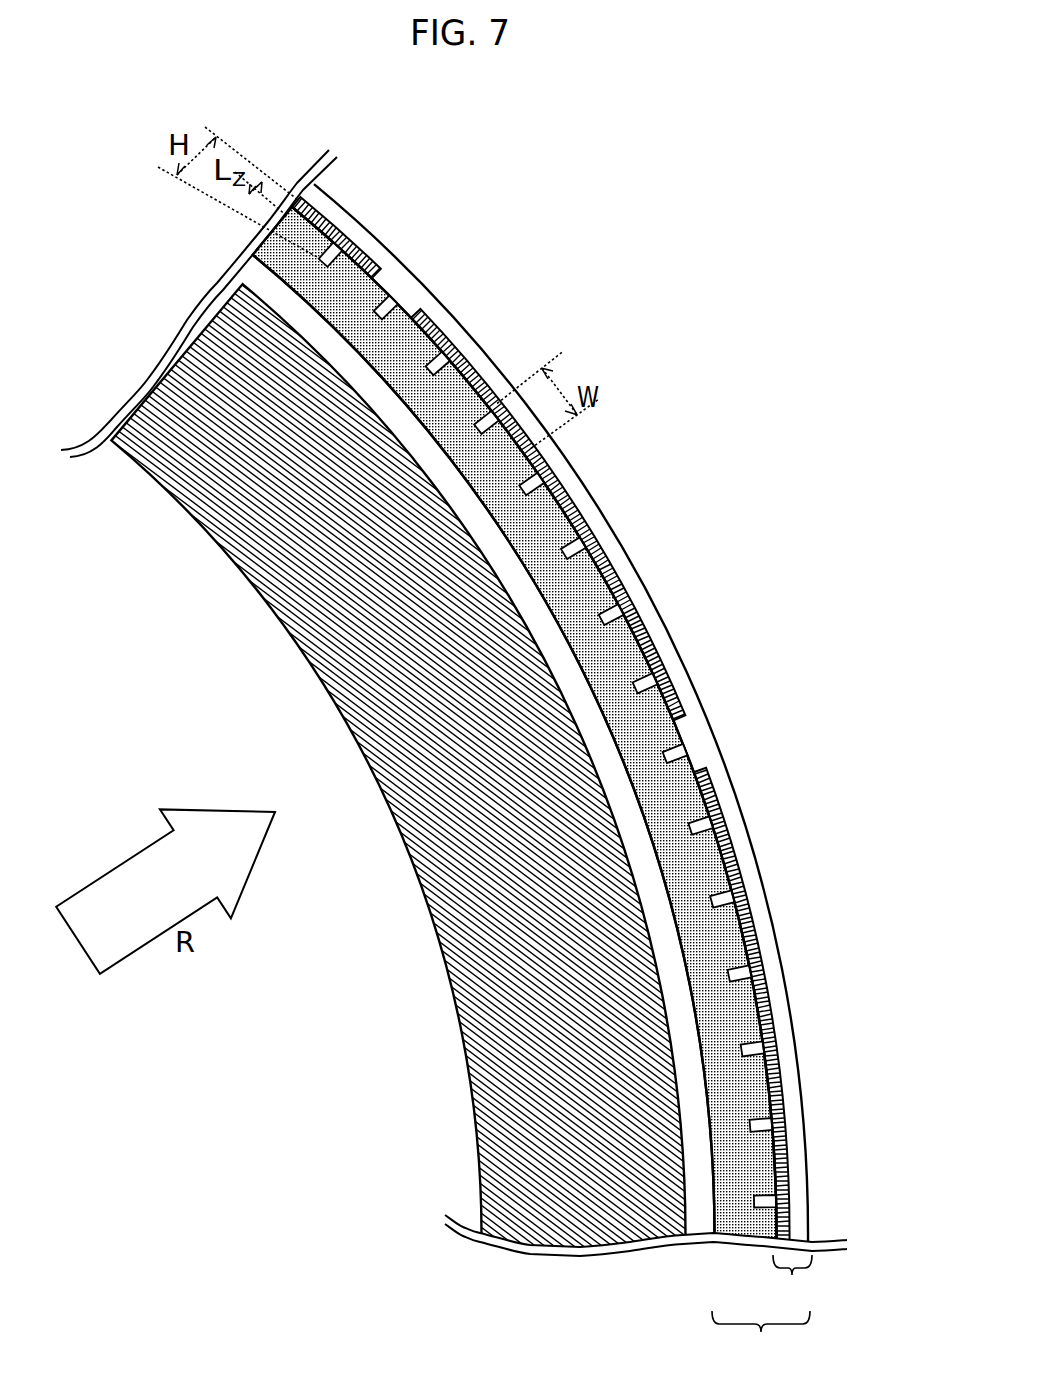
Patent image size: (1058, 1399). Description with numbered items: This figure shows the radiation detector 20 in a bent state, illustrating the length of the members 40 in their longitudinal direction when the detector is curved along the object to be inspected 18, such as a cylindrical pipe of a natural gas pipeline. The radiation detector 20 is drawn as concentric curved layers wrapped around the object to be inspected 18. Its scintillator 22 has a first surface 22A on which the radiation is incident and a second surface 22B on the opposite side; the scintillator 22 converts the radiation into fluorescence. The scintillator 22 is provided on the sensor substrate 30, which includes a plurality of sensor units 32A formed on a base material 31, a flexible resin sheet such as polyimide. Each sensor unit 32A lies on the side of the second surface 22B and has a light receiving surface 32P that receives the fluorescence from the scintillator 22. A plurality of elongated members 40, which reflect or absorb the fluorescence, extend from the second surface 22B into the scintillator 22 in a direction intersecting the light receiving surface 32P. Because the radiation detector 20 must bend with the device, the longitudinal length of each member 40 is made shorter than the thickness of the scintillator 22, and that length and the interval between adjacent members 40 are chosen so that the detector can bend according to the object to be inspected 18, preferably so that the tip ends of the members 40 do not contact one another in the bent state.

The object to be inspected 18 is at (262, 575).
The radiation detector 20 is at (573, 779).
The scintillator 22 is at (573, 739).
The first surface 22A is at (627, 772).
The second surface 22B is at (690, 755).
The sensor substrate 30 is at (537, 748).
The base material 31 is at (402, 282).
The sensor unit 32A is at (438, 337).
The light receiving surface 32P is at (557, 502).
The member 40 is at (613, 618).